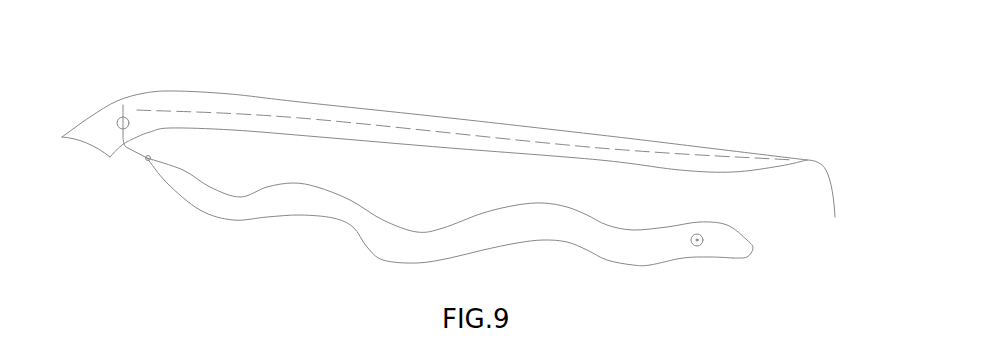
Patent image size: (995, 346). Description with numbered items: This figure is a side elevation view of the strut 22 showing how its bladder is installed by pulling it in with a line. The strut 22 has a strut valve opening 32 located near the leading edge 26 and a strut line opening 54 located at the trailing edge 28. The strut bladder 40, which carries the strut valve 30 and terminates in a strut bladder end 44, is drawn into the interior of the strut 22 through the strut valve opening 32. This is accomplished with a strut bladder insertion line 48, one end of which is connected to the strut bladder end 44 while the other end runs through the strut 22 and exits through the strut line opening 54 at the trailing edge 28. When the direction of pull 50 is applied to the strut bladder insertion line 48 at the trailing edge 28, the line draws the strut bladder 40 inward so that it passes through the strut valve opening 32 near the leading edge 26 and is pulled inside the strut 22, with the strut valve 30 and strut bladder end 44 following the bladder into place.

The strut 22 is at (367, 108).
The leading edge 26 is at (62, 137).
The trailing edge 28 is at (795, 132).
The strut valve 30 is at (702, 244).
The strut valve opening 32 is at (123, 105).
The strut bladder 40 is at (378, 233).
The strut bladder end 44 is at (151, 157).
The strut bladder insertion line 48 is at (824, 168).
The direction of pull 50 is at (127, 150).
The strut line opening 54 is at (807, 160).